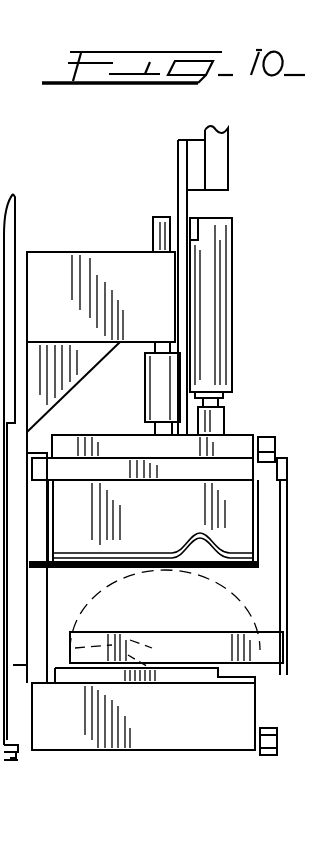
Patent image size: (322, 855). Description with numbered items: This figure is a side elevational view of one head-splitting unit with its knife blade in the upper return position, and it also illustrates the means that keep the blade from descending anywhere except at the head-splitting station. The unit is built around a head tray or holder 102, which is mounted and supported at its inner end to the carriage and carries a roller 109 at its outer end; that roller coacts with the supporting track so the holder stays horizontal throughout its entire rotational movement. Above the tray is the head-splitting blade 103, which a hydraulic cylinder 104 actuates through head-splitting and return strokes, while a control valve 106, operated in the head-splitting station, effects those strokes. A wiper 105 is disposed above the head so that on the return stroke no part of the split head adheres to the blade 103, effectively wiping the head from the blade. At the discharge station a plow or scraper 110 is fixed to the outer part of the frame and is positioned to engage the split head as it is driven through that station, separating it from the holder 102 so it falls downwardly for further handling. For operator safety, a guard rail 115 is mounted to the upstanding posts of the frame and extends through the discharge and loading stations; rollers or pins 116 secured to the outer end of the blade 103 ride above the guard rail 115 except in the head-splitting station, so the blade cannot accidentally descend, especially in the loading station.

The head tray 102 is at (195, 732).
The head-splitting blade 103 is at (242, 525).
The hydraulic cylinder 104 is at (225, 265).
The wiper 105 is at (254, 565).
The control valve 106 is at (222, 155).
The roller 109 is at (278, 738).
The plow or scraper 110 is at (266, 658).
The guard rail 115 is at (284, 468).
The rollers or pins 116 is at (268, 437).